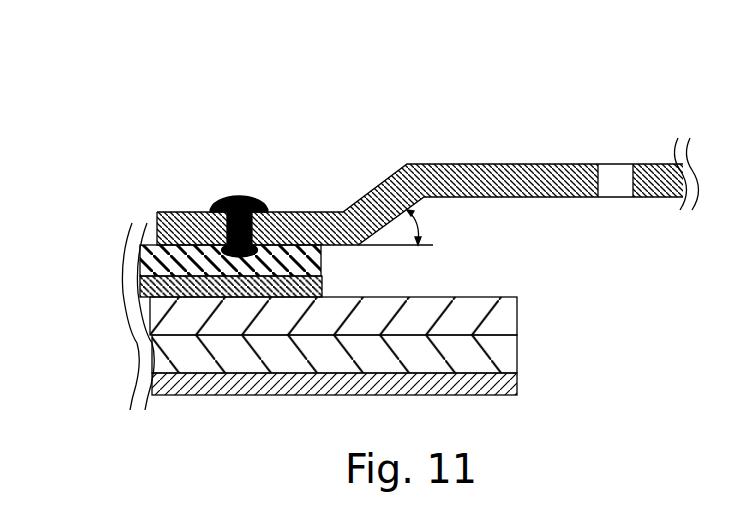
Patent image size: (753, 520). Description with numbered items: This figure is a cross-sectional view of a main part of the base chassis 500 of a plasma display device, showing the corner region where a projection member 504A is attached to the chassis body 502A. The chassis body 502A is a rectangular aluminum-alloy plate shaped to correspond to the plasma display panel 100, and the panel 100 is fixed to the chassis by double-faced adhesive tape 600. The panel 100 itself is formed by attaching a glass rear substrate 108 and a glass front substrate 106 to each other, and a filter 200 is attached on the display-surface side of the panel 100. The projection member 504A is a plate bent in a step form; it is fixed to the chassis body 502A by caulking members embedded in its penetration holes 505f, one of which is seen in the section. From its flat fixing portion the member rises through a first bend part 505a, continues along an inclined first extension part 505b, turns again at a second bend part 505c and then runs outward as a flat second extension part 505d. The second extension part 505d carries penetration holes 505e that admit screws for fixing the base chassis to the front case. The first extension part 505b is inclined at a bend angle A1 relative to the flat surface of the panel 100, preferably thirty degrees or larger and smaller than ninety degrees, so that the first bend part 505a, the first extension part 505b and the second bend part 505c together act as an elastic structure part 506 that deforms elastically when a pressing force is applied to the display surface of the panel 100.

The base chassis 500 is at (184, 150).
The chassis body 502A is at (147, 250).
The double-faced adhesive tape 600 is at (140, 287).
The projection member 504A is at (562, 79).
The first bend part 505a is at (338, 211).
The first extension part 505b is at (375, 188).
The second bend part 505c is at (403, 163).
The second extension part 505d is at (472, 163).
The penetration hole 505e is at (613, 170).
The penetration hole 505f is at (272, 210).
The elastic structure part 506 is at (502, 93).
The bend angle A1 is at (400, 227).
The plasma display panel 100 is at (613, 297).
The rear substrate 108 is at (518, 310).
The front substrate 106 is at (518, 350).
The filter 200 is at (518, 390).